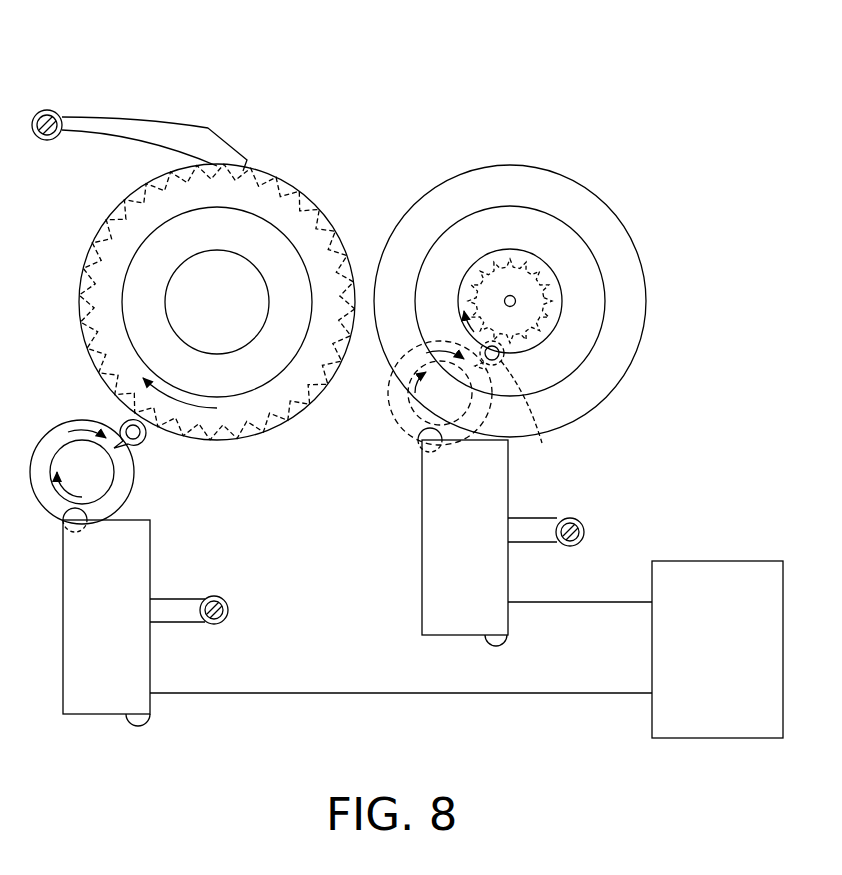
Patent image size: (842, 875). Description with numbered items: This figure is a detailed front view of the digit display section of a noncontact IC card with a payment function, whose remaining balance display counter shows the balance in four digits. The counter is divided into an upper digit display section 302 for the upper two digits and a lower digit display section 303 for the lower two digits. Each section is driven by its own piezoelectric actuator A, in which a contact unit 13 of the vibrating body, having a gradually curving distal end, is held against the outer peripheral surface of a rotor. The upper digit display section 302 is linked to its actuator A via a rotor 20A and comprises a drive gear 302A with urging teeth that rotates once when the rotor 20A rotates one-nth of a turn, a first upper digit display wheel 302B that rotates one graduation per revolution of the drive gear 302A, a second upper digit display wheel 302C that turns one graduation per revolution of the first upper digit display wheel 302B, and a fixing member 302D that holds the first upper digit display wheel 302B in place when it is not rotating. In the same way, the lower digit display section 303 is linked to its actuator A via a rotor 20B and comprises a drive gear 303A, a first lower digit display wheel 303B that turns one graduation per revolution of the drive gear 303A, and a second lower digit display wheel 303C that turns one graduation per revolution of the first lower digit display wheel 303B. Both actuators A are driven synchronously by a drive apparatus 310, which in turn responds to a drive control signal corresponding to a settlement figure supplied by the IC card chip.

The upper digit display section 302 is at (182, 95).
The drive gear 302A is at (147, 442).
The first upper digit display wheel 302B is at (79, 302).
The second upper digit display wheel 302C is at (153, 250).
The fixing member 302D is at (220, 140).
The lower digit display section 303 is at (567, 160).
The drive gear 303A is at (543, 443).
The first lower digit display wheel 303B is at (598, 301).
The second lower digit display wheel 303C is at (592, 386).
The rotor 20A is at (60, 437).
The rotor 20B is at (398, 406).
The contact unit 13 is at (63, 523).
The piezoelectric actuator A is at (63, 632).
The drive apparatus 310 is at (736, 561).